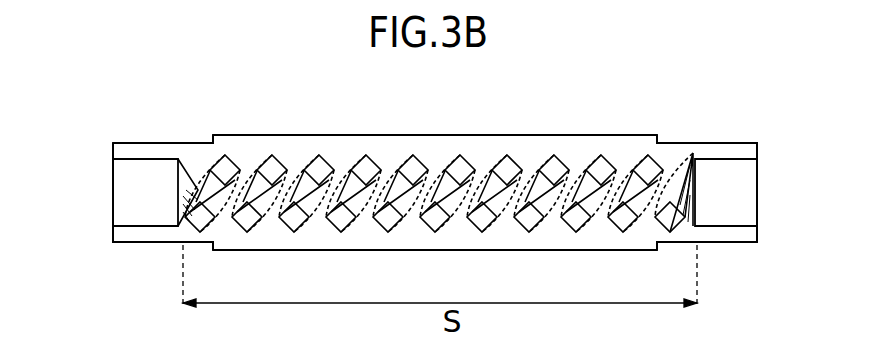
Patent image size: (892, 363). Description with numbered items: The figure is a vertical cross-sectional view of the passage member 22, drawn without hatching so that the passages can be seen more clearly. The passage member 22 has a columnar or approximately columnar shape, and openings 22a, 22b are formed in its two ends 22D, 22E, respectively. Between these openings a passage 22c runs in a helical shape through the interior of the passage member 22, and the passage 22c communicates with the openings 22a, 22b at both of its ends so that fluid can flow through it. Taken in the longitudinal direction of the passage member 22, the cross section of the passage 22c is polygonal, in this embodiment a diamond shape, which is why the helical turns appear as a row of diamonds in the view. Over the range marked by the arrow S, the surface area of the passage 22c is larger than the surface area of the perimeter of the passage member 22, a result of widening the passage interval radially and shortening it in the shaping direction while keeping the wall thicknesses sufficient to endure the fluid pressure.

The passage member 22 is at (407, 136).
The end 22D is at (147, 153).
The end 22E is at (728, 153).
The opening 22a is at (142, 188).
The opening 22b is at (732, 192).
The passage 22c is at (551, 175).